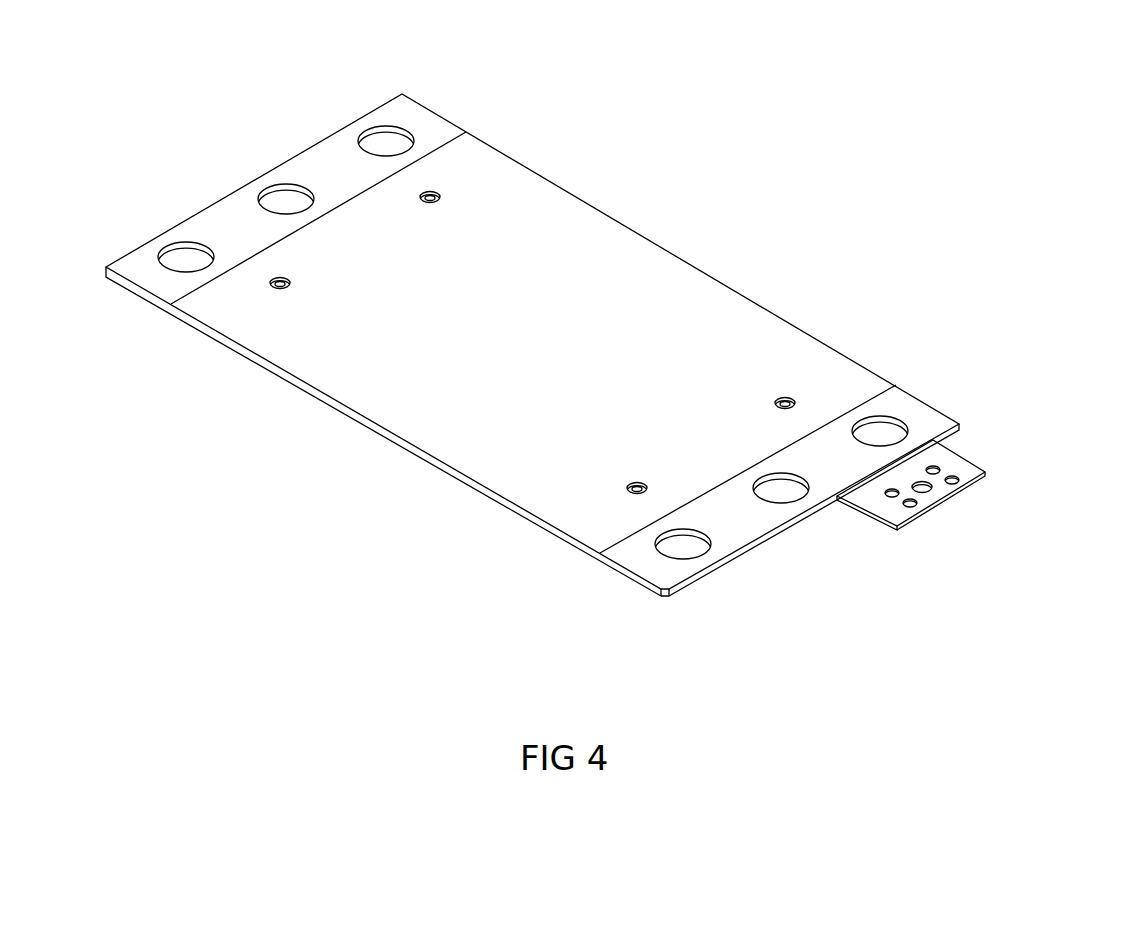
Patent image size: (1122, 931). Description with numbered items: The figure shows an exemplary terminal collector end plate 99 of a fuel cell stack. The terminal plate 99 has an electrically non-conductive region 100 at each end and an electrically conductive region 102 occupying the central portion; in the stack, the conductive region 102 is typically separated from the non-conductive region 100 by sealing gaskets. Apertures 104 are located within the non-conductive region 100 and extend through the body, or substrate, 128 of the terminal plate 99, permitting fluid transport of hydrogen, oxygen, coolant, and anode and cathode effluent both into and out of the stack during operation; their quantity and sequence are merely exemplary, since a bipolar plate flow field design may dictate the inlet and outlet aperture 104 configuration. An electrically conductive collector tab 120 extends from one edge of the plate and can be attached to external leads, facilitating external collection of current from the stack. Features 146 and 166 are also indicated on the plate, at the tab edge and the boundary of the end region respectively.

The terminal collector end plate 99 is at (902, 247).
The electrically non-conductive region 100 is at (402, 110).
The electrically conductive region 102 is at (738, 313).
The apertures 104 is at (383, 137).
The electrically conductive collector tab 120 is at (968, 475).
The body or substrate 128 is at (410, 448).
The tab edge 146 is at (835, 497).
The step line 166 is at (867, 403).